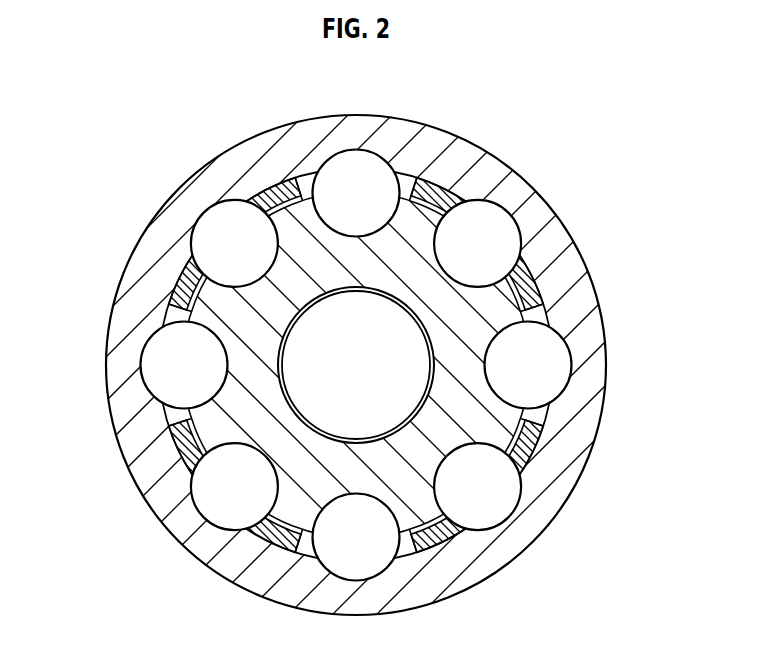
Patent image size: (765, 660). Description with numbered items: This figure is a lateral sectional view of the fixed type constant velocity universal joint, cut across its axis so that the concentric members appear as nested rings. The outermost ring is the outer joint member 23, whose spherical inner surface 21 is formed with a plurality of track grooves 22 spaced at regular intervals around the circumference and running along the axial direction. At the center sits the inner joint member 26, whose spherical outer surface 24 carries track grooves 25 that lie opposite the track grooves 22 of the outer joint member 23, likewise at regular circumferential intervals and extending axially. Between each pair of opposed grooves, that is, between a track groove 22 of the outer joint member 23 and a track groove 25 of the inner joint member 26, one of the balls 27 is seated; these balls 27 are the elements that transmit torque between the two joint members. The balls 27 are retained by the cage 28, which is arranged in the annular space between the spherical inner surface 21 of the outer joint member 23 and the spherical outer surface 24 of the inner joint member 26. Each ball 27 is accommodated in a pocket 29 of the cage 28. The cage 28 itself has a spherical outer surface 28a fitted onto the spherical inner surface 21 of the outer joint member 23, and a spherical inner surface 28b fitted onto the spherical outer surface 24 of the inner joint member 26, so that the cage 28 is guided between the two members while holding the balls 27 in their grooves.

The spherical inner surface 21 is at (336, 168).
The track grooves 22 is at (364, 160).
The outer joint member 23 is at (243, 136).
The spherical outer surface 24 is at (178, 310).
The track grooves 25 is at (246, 285).
The inner joint member 26 is at (214, 359).
The balls 27 is at (390, 148).
The cage 28 is at (265, 556).
The spherical outer surface 28a is at (428, 545).
The spherical inner surface 28b is at (475, 530).
The pocket 29 is at (458, 136).